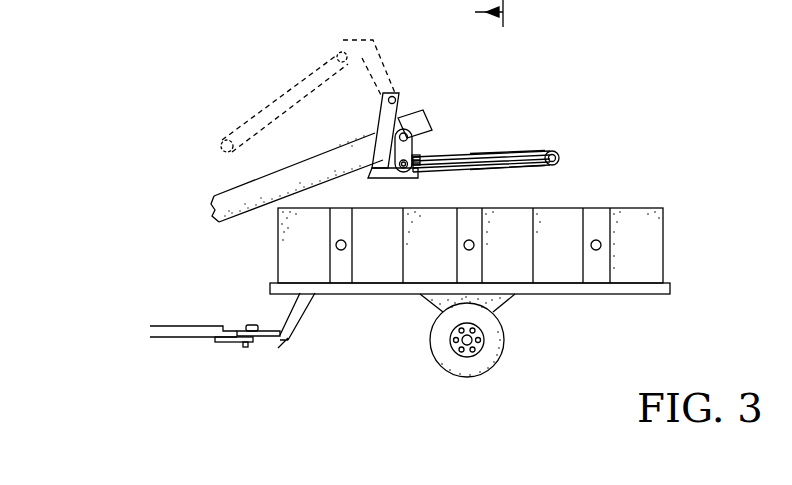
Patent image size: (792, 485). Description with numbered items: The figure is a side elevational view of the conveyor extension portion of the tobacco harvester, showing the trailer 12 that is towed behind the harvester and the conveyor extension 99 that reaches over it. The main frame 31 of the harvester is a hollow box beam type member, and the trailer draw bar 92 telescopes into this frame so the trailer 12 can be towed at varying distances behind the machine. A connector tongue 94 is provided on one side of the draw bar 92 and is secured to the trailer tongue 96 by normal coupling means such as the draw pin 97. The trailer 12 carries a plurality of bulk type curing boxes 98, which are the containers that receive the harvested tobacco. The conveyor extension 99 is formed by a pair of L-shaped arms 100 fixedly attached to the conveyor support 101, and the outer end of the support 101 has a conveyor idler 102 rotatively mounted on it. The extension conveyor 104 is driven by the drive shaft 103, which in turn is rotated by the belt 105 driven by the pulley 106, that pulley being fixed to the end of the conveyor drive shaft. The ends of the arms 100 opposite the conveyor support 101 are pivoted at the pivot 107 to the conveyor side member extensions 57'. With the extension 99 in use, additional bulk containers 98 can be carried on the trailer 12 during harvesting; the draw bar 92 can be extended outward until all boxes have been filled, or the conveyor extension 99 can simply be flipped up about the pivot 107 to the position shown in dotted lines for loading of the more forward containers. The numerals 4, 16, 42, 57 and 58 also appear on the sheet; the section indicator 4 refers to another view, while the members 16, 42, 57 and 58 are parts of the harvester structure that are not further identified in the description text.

The section line 4- 4 is at (498, 13).
The trailer 12 is at (509, 317).
The frame 16 is at (98, 6).
The main frame 31 is at (195, 1).
The support member 42 is at (350, 3).
The pivoted arm 57 is at (297, 172).
The conveyor side member extensions 57' is at (456, 117).
The support member 58 is at (385, 7).
The trailer draw bar 92 is at (195, 330).
The connector tongue 94 is at (230, 345).
The trailer tongue 96 is at (278, 345).
The draw pin 97 is at (252, 325).
The bulk type curing boxes 98 is at (380, 277).
The conveyor extension 99 is at (382, 40).
The L-shaped arms 100 is at (378, 92).
The conveyor support 101 is at (530, 160).
The conveyor idler 102 is at (220, 150).
The drive shaft 103 is at (335, 44).
The extension conveyor 104 is at (275, 100).
The belt 105 is at (372, 170).
The pulley 106 is at (430, 132).
The pivot 107 is at (398, 102).